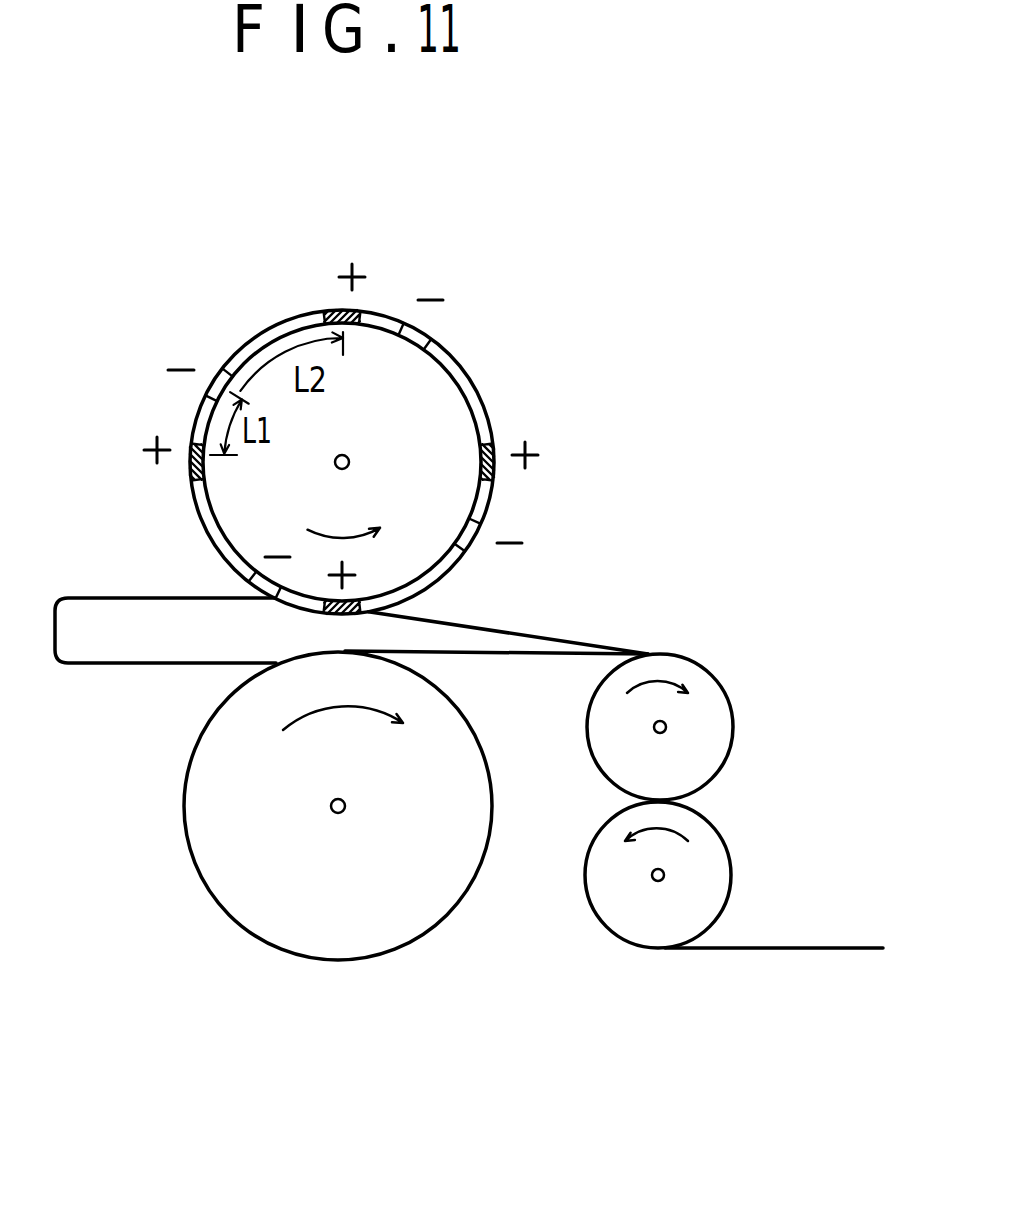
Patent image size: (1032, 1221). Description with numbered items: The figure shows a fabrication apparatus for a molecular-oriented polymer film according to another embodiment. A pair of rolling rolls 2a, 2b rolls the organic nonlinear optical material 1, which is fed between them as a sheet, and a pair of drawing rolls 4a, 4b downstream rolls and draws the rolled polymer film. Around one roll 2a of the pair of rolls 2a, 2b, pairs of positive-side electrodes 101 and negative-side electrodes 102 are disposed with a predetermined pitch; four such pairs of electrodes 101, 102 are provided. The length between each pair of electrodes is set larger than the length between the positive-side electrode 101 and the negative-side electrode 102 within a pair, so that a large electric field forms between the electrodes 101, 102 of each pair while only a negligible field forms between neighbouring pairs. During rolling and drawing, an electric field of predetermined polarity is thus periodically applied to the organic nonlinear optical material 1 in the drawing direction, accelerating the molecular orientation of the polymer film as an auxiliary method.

The organic nonlinear optical material 1 is at (99, 630).
The rolling roll 2a is at (453, 421).
The rolling roll 2b is at (282, 928).
The drawing roll 4a is at (713, 718).
The drawing roll 4b is at (615, 925).
The positive-side electrode 101 is at (340, 308).
The negative-side electrode 102 is at (412, 331).